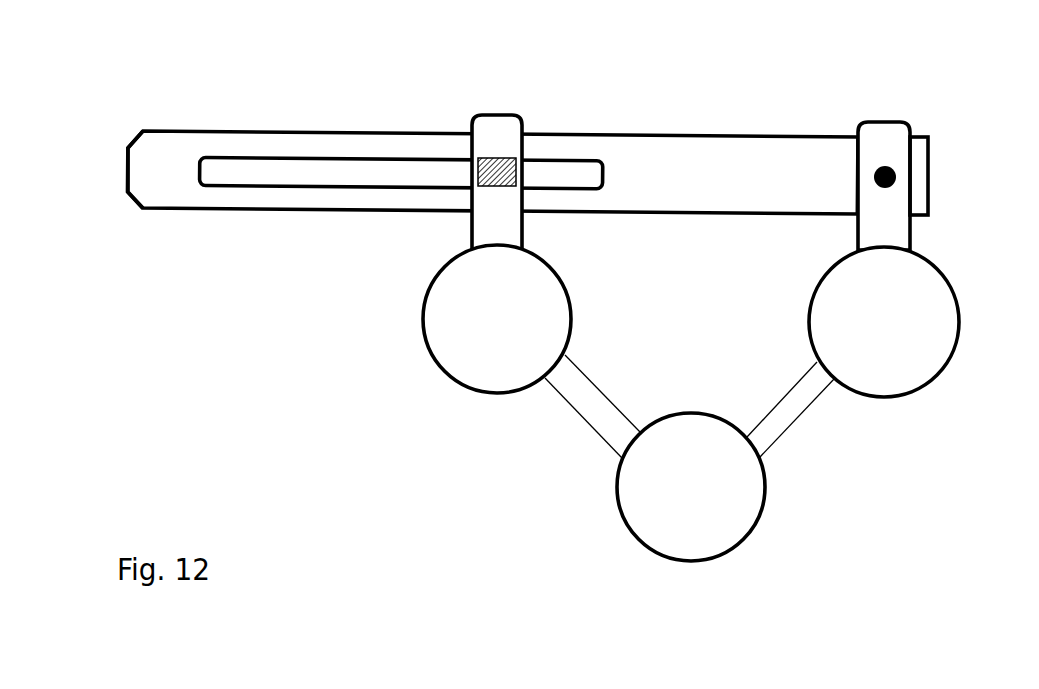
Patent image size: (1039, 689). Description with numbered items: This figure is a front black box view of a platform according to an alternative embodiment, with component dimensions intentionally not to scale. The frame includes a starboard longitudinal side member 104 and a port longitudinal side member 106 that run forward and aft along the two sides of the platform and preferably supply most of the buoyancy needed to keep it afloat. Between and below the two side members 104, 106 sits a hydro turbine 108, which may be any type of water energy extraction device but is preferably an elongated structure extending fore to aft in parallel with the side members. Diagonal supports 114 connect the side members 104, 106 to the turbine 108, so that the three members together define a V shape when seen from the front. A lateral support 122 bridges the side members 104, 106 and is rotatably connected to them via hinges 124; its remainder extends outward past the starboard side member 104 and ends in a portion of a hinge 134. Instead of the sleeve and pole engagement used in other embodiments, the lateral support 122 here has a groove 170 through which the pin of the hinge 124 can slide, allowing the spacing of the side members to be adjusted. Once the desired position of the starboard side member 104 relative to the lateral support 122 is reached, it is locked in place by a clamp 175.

The starboard longitudinal side member 104 is at (453, 396).
The port longitudinal side member 106 is at (913, 419).
The hydro turbine 108 is at (638, 568).
The diagonal supports 114 is at (587, 445).
The lateral support 122 is at (346, 115).
The hinge 124 is at (535, 108).
The hinge 134 is at (155, 158).
The groove 170 is at (320, 186).
The clamp 175 is at (497, 152).